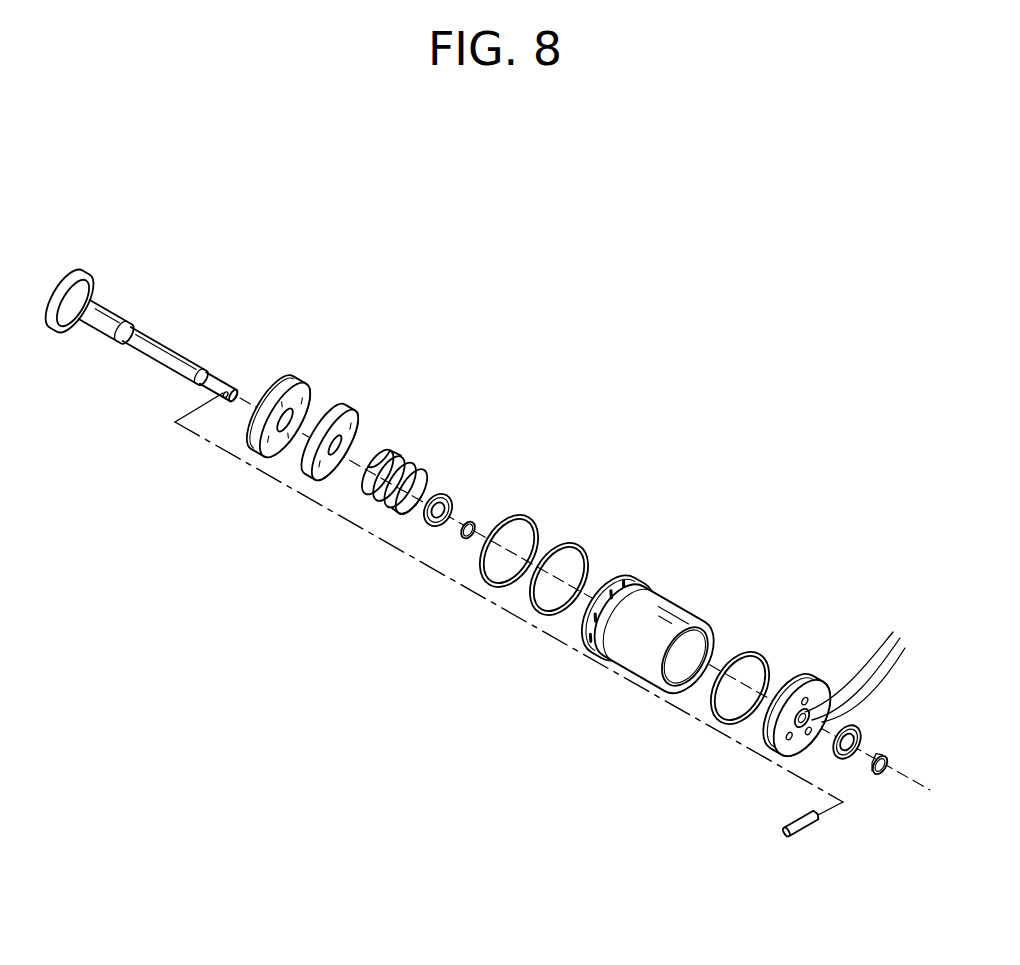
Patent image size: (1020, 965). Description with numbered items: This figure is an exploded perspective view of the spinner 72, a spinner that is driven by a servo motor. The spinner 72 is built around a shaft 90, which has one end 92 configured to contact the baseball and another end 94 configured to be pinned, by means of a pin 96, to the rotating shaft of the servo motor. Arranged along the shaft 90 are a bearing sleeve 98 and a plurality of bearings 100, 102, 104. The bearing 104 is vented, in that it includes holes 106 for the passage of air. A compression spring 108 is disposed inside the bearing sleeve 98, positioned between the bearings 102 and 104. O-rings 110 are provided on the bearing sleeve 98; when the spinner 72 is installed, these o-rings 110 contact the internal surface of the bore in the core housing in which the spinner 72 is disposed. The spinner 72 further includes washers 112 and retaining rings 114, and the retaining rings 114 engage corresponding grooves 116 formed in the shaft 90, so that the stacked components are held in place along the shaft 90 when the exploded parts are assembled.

The spinner 72 is at (337, 632).
The shaft 90 is at (146, 349).
The end 92 is at (60, 272).
The end 94 is at (236, 386).
The pin 96 is at (803, 836).
The bearing sleeve 98 is at (671, 595).
The bearing 100 is at (298, 380).
The bearing 102 is at (348, 420).
The bearing 104 is at (846, 689).
The holes 106 is at (817, 678).
The compression spring 108 is at (404, 457).
The o-rings 110 is at (536, 509).
The washers 112 is at (448, 486).
The retaining rings 114 is at (476, 507).
The grooves 116 is at (210, 384).